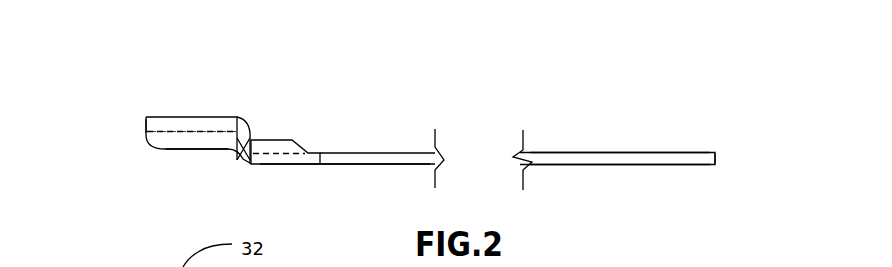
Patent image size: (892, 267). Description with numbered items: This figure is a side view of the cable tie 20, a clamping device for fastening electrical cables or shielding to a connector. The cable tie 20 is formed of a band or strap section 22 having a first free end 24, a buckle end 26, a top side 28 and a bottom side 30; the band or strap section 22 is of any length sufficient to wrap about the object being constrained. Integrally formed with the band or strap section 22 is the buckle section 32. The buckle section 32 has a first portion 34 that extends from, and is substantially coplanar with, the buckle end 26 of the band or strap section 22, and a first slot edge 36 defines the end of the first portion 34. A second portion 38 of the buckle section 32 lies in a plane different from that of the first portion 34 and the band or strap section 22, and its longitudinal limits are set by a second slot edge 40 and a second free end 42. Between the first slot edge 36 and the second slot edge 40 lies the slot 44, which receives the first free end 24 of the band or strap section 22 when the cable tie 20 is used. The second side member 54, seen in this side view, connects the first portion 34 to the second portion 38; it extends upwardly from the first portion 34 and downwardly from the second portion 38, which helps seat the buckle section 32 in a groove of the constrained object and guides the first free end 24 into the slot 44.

The cable tie 20 is at (354, 64).
The band or strap section 22 is at (543, 140).
The first free end 24 is at (712, 156).
The buckle end 26 is at (325, 157).
The top side 28 is at (557, 160).
The bottom side 30 is at (612, 165).
The buckle section 32 is at (190, 56).
The first portion 34 is at (297, 164).
The first slot edge 36 is at (265, 163).
The second portion 38 is at (187, 117).
The second slot edge 40 is at (253, 137).
The second free end 42 is at (146, 122).
The slot 44 is at (237, 152).
The second side member 54 is at (190, 142).